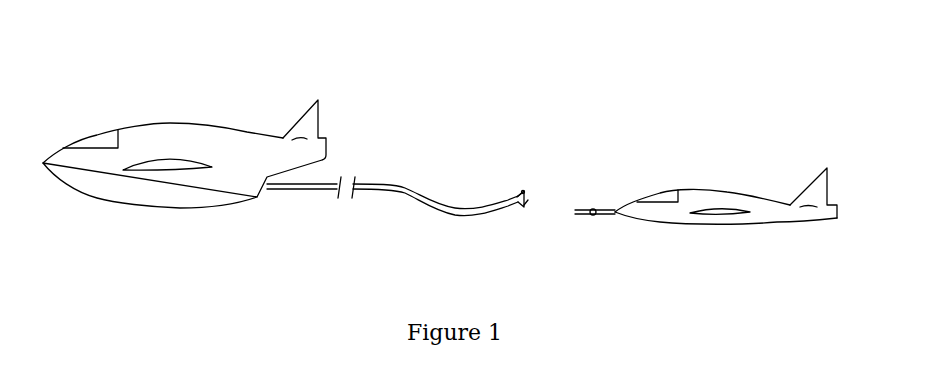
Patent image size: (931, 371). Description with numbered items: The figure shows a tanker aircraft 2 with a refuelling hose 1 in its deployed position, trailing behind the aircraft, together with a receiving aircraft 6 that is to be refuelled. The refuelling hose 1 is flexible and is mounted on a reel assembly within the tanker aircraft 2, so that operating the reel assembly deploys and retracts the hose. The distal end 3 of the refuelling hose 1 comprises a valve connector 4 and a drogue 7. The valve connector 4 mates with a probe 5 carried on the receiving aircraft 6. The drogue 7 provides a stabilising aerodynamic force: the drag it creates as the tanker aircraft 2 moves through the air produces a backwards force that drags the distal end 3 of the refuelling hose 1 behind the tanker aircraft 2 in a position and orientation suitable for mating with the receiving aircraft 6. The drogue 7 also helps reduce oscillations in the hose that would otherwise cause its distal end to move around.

The refuelling hose 1 is at (402, 190).
The tanker aircraft 2 is at (203, 138).
The distal end 3 is at (533, 185).
The valve connector 4 is at (528, 200).
The probe 5 is at (589, 218).
The receiving aircraft 6 is at (720, 197).
The drogue 7 is at (522, 193).